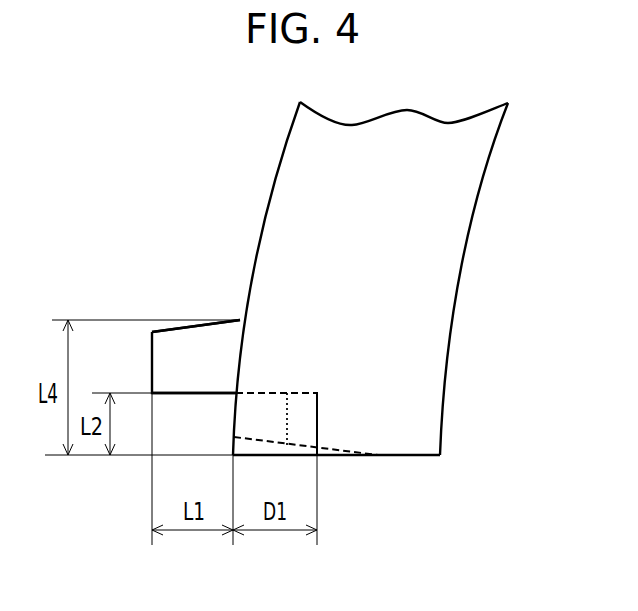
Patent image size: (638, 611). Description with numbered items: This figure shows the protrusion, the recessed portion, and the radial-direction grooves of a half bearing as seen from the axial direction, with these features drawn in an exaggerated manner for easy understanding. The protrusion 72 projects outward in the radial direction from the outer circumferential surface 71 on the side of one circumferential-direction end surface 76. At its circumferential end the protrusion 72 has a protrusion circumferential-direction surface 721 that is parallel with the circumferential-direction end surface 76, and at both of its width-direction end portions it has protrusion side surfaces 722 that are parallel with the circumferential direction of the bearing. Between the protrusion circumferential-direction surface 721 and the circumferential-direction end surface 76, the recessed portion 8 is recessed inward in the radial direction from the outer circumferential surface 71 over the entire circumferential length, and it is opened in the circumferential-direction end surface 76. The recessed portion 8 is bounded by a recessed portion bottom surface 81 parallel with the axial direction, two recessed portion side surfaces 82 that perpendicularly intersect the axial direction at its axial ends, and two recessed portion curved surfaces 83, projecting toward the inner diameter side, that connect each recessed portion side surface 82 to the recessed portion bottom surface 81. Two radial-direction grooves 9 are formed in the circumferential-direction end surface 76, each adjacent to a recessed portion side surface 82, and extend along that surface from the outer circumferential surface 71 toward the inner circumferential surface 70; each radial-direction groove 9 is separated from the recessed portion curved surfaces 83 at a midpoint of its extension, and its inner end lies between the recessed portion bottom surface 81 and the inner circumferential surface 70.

The inner circumferential surface 70 is at (495, 140).
The outer circumferential surface 71 is at (282, 150).
The protrusion 72 is at (168, 330).
The protrusion circumferential-direction surface 721 is at (197, 398).
The protrusion side surface 722 is at (173, 363).
The circumferential-direction end surface 76 is at (423, 458).
The recessed portion 8 is at (243, 418).
The recessed portion bottom surface 81 is at (315, 425).
The recessed portion side surface 82 is at (257, 414).
The recessed portion curved surface 83 is at (295, 408).
The radial-direction groove 9 is at (277, 448).